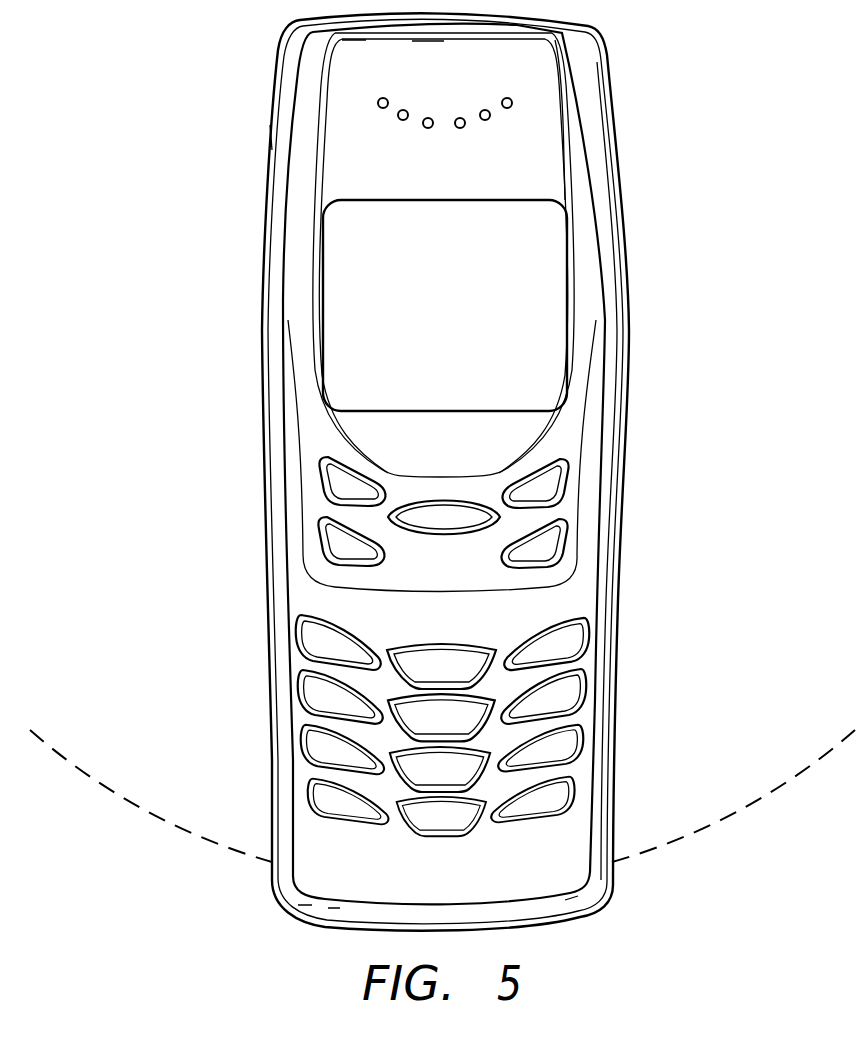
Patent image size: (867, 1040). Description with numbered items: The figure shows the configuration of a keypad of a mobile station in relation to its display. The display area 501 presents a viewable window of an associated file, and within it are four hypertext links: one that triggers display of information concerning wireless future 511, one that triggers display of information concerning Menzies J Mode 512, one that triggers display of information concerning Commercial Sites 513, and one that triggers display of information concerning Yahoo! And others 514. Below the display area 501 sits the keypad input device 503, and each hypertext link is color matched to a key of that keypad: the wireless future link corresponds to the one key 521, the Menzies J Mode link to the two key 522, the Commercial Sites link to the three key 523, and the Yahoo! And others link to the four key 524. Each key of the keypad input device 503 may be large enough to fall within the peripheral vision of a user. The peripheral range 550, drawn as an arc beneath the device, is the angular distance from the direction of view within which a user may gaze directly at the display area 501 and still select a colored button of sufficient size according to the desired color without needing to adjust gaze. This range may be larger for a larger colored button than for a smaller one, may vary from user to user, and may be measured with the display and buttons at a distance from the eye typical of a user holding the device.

The display area 501 is at (376, 200).
The hypertext link concerning wireless future 511 is at (343, 257).
The hypertext link concerning Menzies J Mode 512 is at (530, 287).
The hypertext link concerning Commercial Sites 513 is at (345, 318).
The hypertext link concerning Yahoo! And others 514 is at (547, 344).
The one key 521 is at (312, 640).
The two key 522 is at (412, 654).
The three key 523 is at (502, 552).
The four key 524 is at (313, 686).
The keypad input device 503 is at (631, 449).
The peripheral range 550 is at (733, 818).